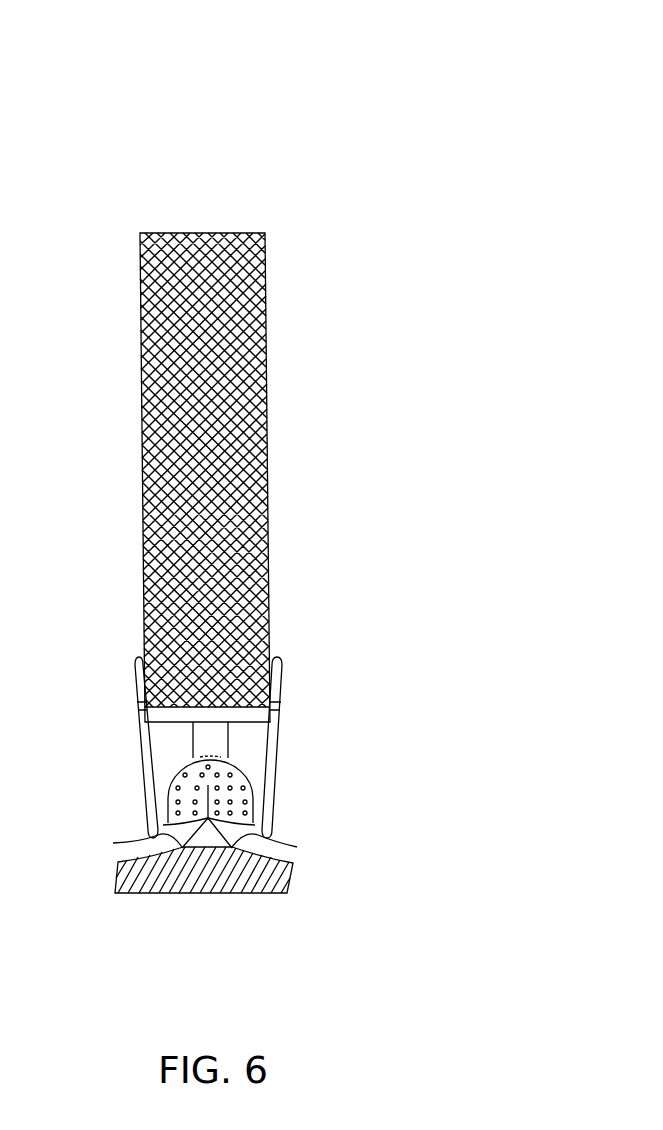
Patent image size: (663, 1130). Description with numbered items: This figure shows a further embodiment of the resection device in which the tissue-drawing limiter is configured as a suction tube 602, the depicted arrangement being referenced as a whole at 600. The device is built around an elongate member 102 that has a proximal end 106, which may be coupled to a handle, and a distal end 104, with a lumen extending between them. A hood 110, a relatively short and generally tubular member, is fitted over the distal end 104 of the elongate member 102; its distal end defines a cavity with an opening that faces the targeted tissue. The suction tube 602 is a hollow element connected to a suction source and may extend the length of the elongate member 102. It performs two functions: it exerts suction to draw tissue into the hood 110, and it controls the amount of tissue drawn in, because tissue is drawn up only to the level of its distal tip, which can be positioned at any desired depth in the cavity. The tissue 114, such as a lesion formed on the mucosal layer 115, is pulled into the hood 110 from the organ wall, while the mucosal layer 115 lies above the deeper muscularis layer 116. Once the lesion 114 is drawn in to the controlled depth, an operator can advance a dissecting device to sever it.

The system 600 is at (471, 86).
The elongate member 102 is at (280, 516).
The distal end 104 is at (270, 693).
The proximal end 106 is at (266, 280).
The hood 110 is at (272, 787).
The tissue 114 is at (178, 813).
The mucosal layer 115 is at (128, 840).
The muscularis layer 116 is at (123, 882).
The suction tube 602 is at (193, 753).